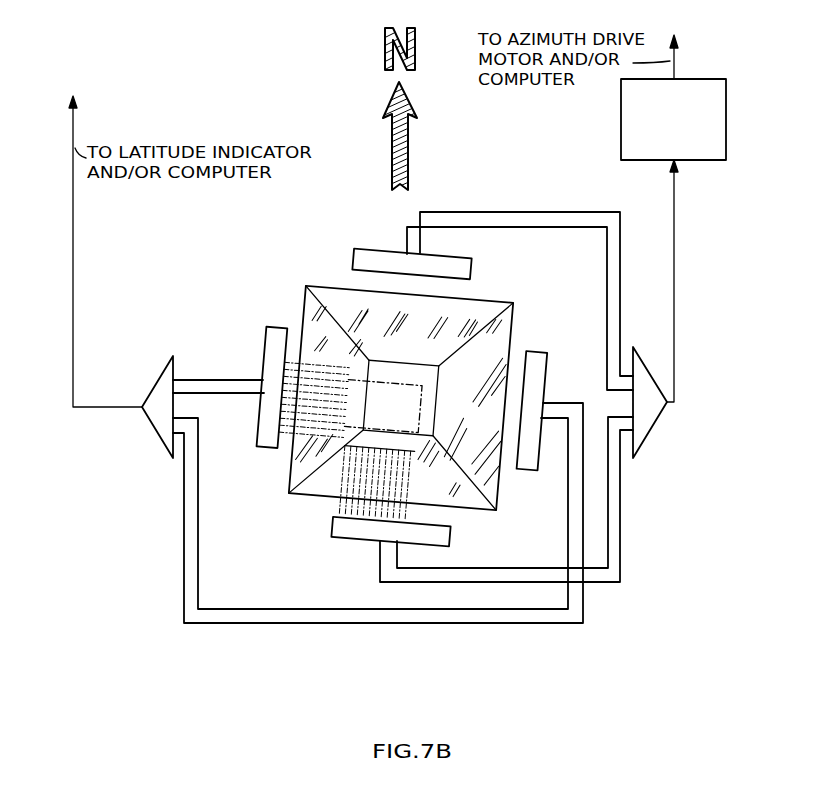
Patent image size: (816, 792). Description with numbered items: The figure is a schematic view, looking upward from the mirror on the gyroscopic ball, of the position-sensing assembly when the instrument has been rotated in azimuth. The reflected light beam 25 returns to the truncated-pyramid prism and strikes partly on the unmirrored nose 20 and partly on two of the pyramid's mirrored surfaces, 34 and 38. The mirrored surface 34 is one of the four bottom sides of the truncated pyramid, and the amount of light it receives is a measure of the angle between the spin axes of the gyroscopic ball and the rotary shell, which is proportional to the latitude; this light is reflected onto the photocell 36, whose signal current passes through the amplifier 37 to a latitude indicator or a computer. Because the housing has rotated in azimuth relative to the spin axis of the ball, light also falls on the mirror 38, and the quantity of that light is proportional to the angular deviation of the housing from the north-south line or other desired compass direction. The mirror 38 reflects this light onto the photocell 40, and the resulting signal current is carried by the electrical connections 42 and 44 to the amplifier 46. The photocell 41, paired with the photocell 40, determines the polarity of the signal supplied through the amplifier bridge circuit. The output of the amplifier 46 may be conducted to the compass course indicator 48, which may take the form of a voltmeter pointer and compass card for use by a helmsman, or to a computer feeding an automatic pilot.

The unmirrored nose 20 is at (401, 398).
The reflected light beam 25 is at (418, 398).
The mirrored surface 34 is at (337, 349).
The photocell 36 is at (272, 343).
The amplifier 37 is at (156, 422).
The mirrored surface 38 is at (450, 489).
The photocell 40 is at (445, 541).
The photocell 41 is at (458, 281).
The electrical connection 42 is at (507, 565).
The electrical connection 44 is at (621, 545).
The amplifier 46 is at (650, 420).
The compass course indicator 48 is at (681, 163).